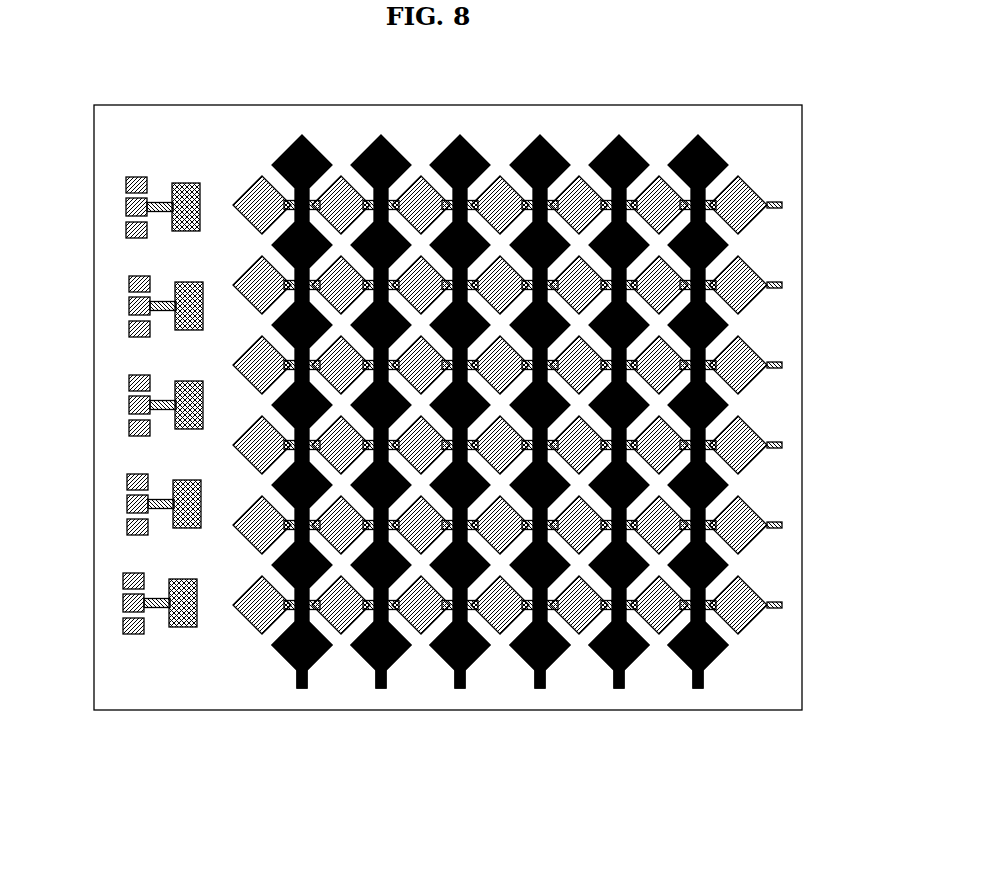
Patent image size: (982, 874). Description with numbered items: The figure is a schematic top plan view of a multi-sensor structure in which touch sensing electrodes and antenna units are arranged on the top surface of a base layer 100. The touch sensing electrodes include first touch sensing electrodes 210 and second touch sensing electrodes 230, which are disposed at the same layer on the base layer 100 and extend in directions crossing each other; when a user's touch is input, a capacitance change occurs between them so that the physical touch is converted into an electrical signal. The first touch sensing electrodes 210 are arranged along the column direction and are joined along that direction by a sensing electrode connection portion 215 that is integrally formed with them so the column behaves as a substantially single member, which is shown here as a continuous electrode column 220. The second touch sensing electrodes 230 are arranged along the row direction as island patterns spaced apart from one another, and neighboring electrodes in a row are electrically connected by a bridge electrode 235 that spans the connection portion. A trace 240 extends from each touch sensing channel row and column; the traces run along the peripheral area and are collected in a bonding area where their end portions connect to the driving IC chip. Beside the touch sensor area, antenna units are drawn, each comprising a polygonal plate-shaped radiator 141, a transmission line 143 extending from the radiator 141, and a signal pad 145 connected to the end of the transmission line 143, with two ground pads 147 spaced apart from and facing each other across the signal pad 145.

The base layer 100 is at (160, 690).
The radiator 141 is at (187, 185).
The transmission line 143 is at (163, 203).
The signal pad 145 is at (126, 207).
The ground pads 147 is at (126, 185).
The first touch sensing electrodes 210 is at (718, 660).
The sensing electrode connection portion 215 is at (703, 535).
The first sensing electrode column 220 is at (700, 137).
The second touch sensing electrodes 230 is at (757, 425).
The bridge electrode 235 is at (713, 453).
The trace 240 is at (782, 357).